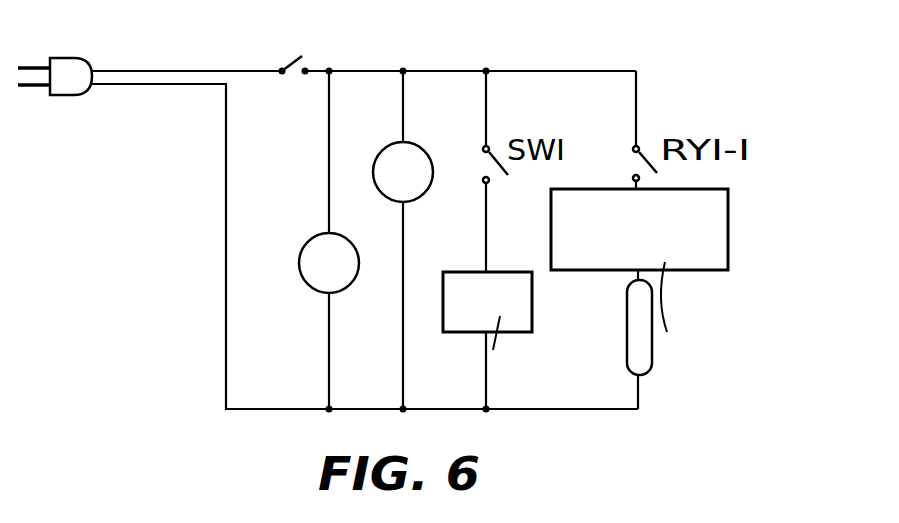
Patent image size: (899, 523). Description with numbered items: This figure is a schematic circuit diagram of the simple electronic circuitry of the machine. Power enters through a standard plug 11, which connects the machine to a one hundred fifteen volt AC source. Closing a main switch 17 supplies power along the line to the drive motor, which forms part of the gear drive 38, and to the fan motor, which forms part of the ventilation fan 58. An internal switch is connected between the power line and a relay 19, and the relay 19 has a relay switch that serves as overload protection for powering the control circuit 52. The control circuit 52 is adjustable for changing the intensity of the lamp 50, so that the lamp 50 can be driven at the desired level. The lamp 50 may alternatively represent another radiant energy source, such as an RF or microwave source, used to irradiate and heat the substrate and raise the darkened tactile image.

The plug 11 is at (78, 78).
The main switch 17 is at (291, 76).
The gear drive 38 is at (317, 282).
The ventilation fan 58 is at (396, 145).
The relay 19 is at (478, 322).
The lamp 50 is at (628, 313).
The control circuit 52 is at (728, 230).